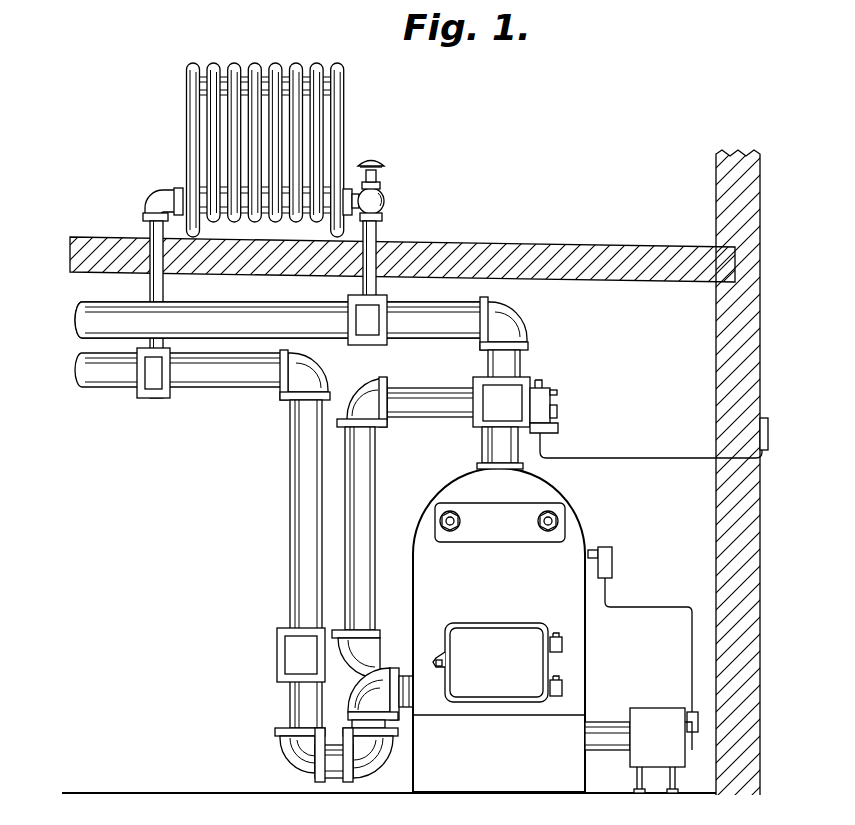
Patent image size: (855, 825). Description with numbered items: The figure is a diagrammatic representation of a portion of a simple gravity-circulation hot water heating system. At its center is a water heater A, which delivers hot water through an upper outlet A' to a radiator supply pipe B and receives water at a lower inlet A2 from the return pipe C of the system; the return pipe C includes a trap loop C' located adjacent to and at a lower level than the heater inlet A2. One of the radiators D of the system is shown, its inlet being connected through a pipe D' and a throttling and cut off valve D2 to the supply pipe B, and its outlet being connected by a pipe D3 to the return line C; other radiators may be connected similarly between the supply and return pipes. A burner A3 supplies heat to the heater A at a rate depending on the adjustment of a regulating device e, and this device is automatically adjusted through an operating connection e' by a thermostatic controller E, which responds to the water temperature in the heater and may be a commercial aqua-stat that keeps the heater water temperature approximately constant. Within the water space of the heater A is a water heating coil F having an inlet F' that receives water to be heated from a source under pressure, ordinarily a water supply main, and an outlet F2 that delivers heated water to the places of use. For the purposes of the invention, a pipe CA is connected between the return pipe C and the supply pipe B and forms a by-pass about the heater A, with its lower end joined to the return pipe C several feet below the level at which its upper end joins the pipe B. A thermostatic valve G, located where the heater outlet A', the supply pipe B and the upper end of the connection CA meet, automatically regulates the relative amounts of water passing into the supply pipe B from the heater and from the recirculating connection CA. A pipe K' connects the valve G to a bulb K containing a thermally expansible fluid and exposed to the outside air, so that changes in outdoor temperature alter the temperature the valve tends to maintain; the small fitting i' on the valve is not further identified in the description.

The radiator D is at (277, 149).
The radiator inlet pipe D' is at (392, 258).
The throttling and cut off valve D2 is at (380, 197).
The radiator outlet pipe D3 is at (151, 232).
The radiator supply pipe B is at (395, 312).
The return pipe C is at (202, 538).
The recirculating connection pipe CA is at (372, 500).
The thermostatic valve G is at (530, 385).
The valve actuating attachment i' is at (564, 401).
The bulb K is at (780, 434).
The pipe K' is at (651, 439).
The water heater A is at (499, 630).
The upper outlet A' is at (485, 448).
The lower inlet A2 is at (402, 676).
The burner A3 is at (635, 750).
The water heating coil F is at (500, 510).
The coil inlet F' is at (570, 509).
The coil outlet F2 is at (438, 521).
The thermostatic controller E is at (612, 561).
The regulating device e is at (696, 735).
The operating connection e' is at (648, 645).
The trap loop C' is at (319, 755).